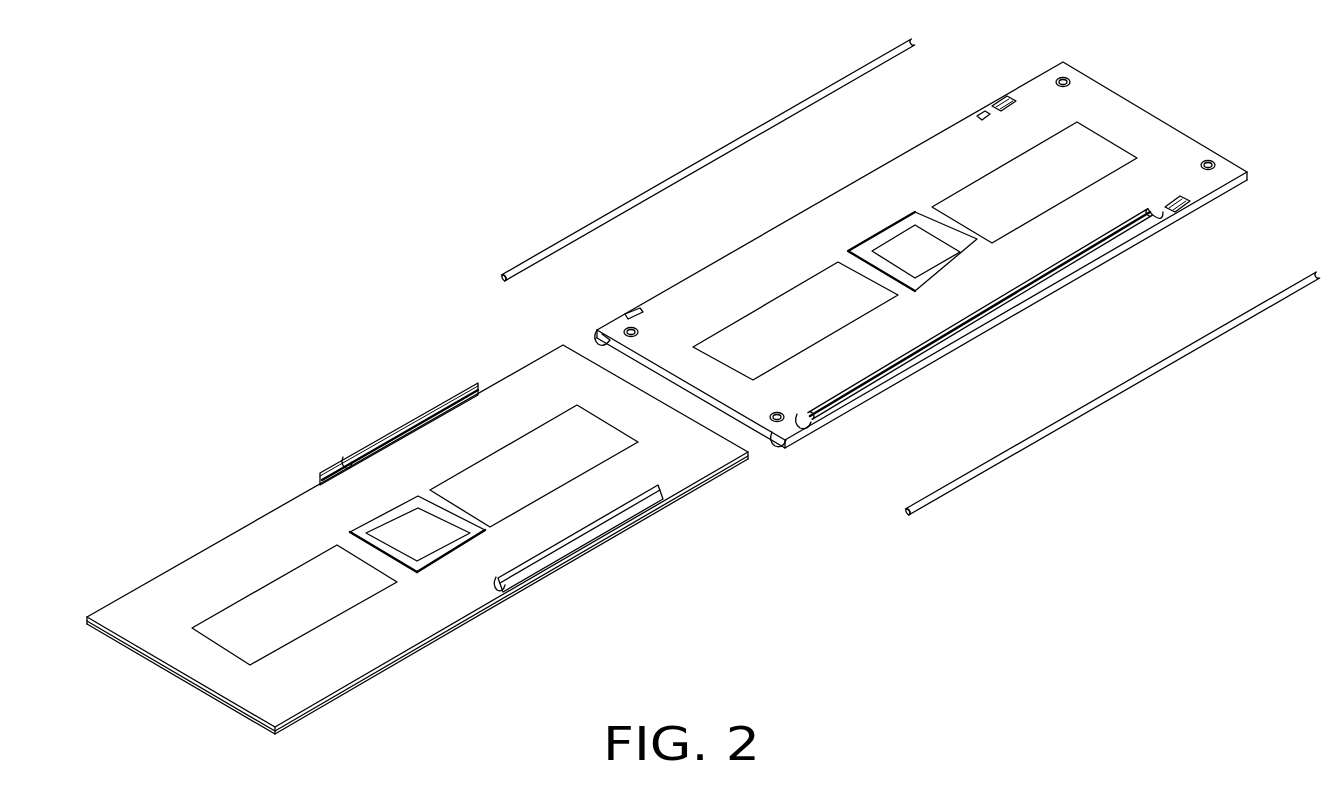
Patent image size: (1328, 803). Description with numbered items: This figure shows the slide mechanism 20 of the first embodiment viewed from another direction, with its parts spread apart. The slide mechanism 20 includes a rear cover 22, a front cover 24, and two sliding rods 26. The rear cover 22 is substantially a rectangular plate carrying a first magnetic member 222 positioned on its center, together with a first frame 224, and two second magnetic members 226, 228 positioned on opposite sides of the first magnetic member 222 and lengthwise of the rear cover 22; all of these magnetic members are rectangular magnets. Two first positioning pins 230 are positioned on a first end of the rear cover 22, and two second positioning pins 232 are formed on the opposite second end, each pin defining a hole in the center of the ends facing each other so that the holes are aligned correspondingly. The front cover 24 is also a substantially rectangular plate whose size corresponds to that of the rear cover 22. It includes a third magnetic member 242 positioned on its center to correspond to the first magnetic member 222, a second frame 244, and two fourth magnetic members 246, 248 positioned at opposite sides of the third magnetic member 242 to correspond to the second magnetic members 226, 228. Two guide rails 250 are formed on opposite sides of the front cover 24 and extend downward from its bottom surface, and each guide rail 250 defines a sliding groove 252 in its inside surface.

The slide mechanism 20 is at (422, 108).
The rear cover 22 is at (1141, 97).
The front cover 24 is at (143, 573).
The sliding rods 26 is at (807, 105).
The first magnetic member 222 is at (908, 243).
The first frame 224 is at (860, 248).
The second magnetic member 226 is at (792, 307).
The second magnetic member 228 is at (1052, 155).
The first positioning pins 230 is at (612, 327).
The second positioning pins 232 is at (1163, 213).
The third magnetic member 242 is at (413, 523).
The second frame 244 is at (363, 533).
The fourth magnetic member 246 is at (247, 618).
The fourth magnetic member 248 is at (567, 442).
The guide rails 250 is at (327, 477).
The sliding groove 252 is at (352, 458).